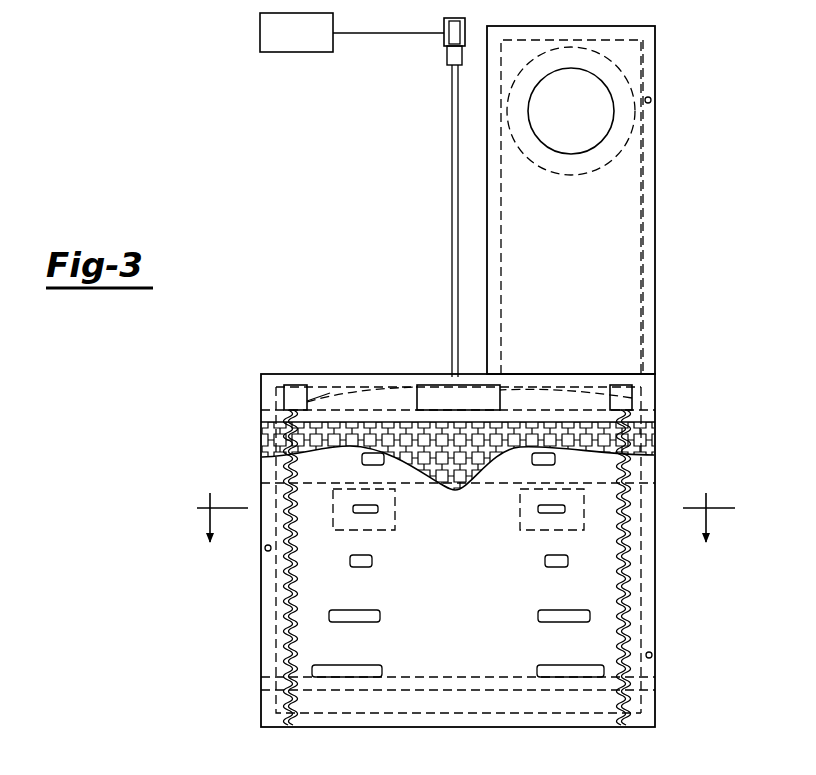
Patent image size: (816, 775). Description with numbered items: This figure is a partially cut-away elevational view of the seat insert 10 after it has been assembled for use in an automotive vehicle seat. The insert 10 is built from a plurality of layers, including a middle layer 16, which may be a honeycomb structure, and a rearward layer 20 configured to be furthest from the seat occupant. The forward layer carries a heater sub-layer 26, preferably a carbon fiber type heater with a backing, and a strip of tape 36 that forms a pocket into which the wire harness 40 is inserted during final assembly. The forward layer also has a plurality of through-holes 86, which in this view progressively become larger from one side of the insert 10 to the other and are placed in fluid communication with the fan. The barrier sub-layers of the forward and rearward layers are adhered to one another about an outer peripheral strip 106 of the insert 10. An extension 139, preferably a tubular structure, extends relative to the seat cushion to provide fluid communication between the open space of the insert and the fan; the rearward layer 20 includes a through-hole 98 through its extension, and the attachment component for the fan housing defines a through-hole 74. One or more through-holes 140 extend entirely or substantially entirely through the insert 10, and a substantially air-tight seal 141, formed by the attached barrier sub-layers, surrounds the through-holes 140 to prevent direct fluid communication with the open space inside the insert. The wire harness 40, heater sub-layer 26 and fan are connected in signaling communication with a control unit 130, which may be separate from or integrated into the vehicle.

The insert 10 is at (266, 188).
The control unit 130 is at (256, 32).
The rearward layer 20 is at (613, 190).
The extension 139 is at (578, 256).
The outer peripheral strip 106 is at (648, 325).
The through-hole 74 is at (573, 89).
The through-hole 98 is at (570, 110).
The middle layer 16 is at (587, 386).
The strip of tape 36 is at (352, 403).
The wire harness 40 is at (425, 405).
The heater sub-layer 26 is at (550, 430).
The seal 141 is at (333, 508).
The through-holes 140 is at (540, 508).
The through-holes 86 is at (560, 665).